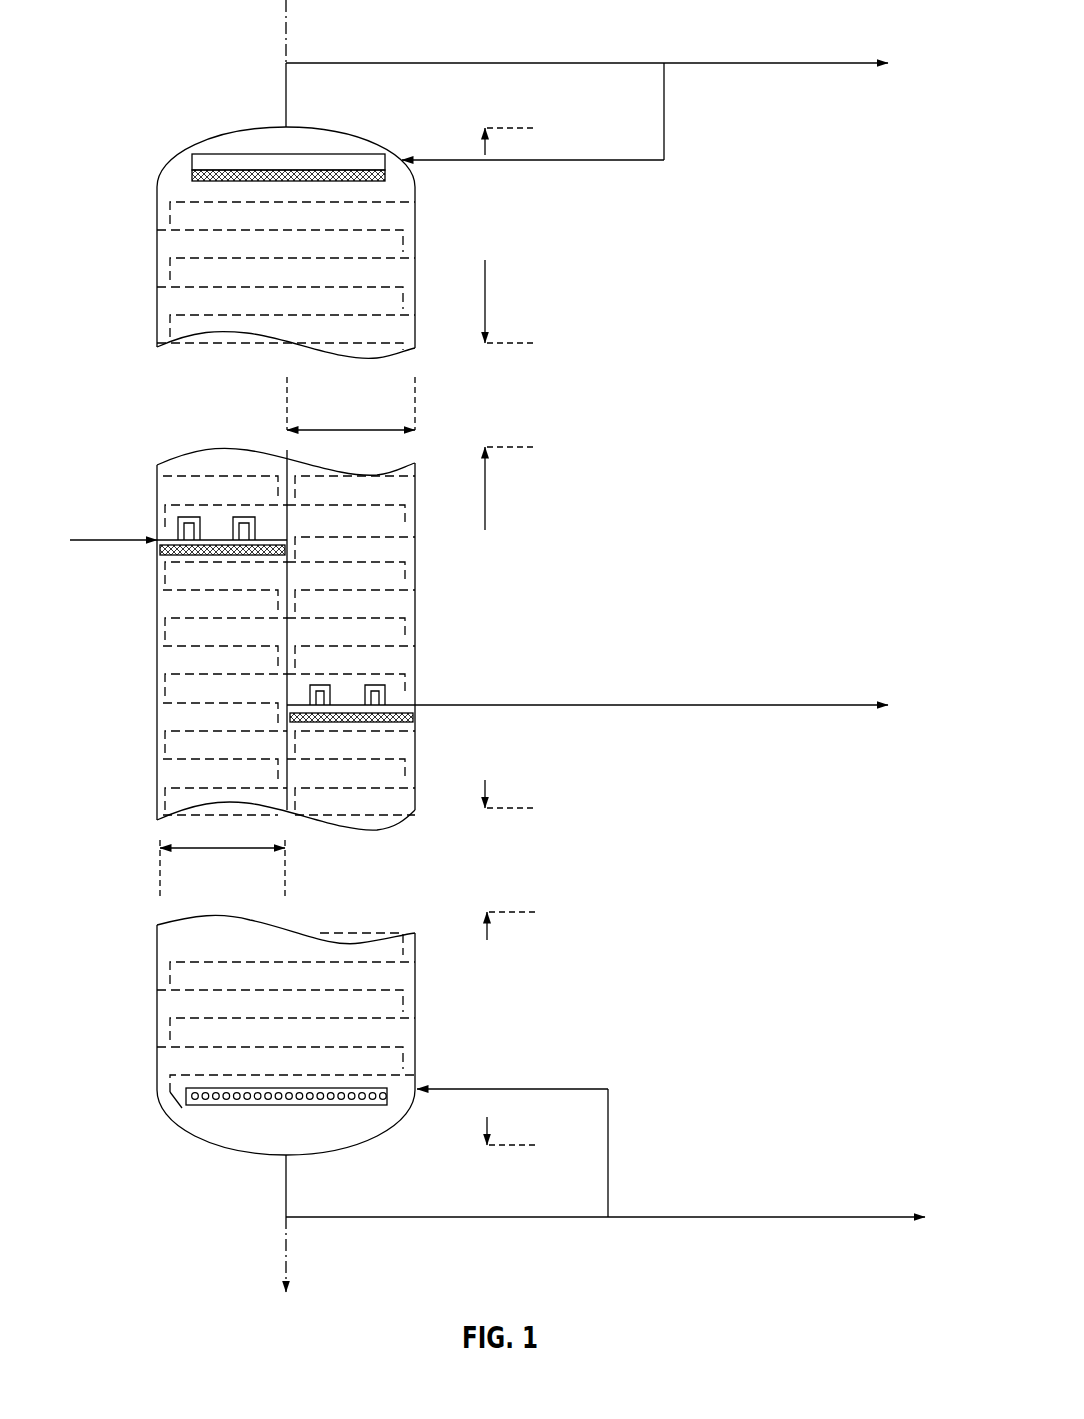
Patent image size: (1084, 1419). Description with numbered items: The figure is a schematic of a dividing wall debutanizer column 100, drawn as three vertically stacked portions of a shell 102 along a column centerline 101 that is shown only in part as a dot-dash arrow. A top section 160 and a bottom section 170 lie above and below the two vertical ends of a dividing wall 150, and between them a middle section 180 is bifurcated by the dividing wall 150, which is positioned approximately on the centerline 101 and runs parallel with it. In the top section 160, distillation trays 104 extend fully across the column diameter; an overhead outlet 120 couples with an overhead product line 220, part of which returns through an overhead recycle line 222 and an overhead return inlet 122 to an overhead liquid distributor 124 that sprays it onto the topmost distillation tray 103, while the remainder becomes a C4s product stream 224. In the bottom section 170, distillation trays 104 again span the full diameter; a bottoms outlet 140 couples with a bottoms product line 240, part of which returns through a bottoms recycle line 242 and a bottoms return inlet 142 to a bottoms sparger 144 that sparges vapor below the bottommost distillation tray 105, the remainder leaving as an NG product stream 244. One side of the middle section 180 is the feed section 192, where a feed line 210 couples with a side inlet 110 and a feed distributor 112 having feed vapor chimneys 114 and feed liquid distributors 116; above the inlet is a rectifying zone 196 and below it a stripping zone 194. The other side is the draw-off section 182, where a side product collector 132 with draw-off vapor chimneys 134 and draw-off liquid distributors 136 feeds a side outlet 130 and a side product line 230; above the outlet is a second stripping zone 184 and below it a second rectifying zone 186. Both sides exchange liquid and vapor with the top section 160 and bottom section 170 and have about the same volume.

The dividing wall debutanizer column 100 is at (287, 591).
The column centerline 101 is at (283, 32).
The shell 102 is at (287, 641).
The topmost distillation tray 103 is at (187, 198).
The distillation trays 104 is at (178, 258).
The bottommost distillation tray 105 is at (180, 1075).
The side inlet 110 is at (140, 543).
The feed distributor 112 is at (168, 540).
The feed vapor chimneys 114 is at (187, 505).
The feed liquid distributors 116 is at (195, 557).
The overhead outlet 120 is at (285, 97).
The overhead return inlet 122 is at (583, 160).
The overhead liquid distributor 124 is at (235, 152).
The side outlet 130 is at (523, 703).
The side product collector 132 is at (402, 703).
The draw-off vapor chimneys 134 is at (388, 660).
The draw-off liquid distributors 136 is at (410, 720).
The bottoms outlet 140 is at (300, 1192).
The bottoms return inlet 142 is at (435, 1089).
The bottoms sparger 144 is at (203, 1117).
The dividing wall 150 is at (288, 637).
The top section 160 is at (485, 297).
The bottom section 170 is at (487, 930).
The middle section 180 is at (485, 488).
The draw-off section 182 is at (337, 430).
The second stripping zone 184 is at (415, 597).
The second rectifying zone 186 is at (380, 822).
The feed section 192 is at (205, 850).
The stripping zone 194 is at (157, 717).
The rectifying zone 196 is at (187, 460).
The feed line 210 is at (113, 524).
The overhead product line 220 is at (532, 62).
The overhead recycle line 222 is at (665, 110).
The C4s product stream 224 is at (594, 45).
The side product line 230 is at (651, 686).
The bottoms product line 240 is at (503, 1217).
The bottoms recycle line 242 is at (563, 1089).
The NG product stream 244 is at (605, 1215).